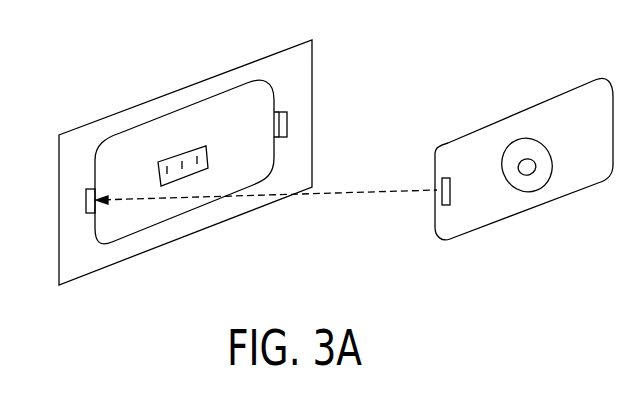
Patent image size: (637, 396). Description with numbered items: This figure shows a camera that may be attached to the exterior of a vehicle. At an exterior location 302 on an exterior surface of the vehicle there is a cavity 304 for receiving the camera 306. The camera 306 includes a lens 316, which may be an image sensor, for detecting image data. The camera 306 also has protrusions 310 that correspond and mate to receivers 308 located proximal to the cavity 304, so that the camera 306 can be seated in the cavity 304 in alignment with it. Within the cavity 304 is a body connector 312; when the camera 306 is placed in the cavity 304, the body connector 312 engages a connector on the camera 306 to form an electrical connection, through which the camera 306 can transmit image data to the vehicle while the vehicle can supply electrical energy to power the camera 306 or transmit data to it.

The exterior location 302 is at (165, 95).
The cavity 304 is at (234, 107).
The camera 306 is at (540, 103).
The receivers 308 is at (86, 203).
The protrusions 310 is at (440, 198).
The body connector 312 is at (177, 155).
The lens 316 is at (530, 190).